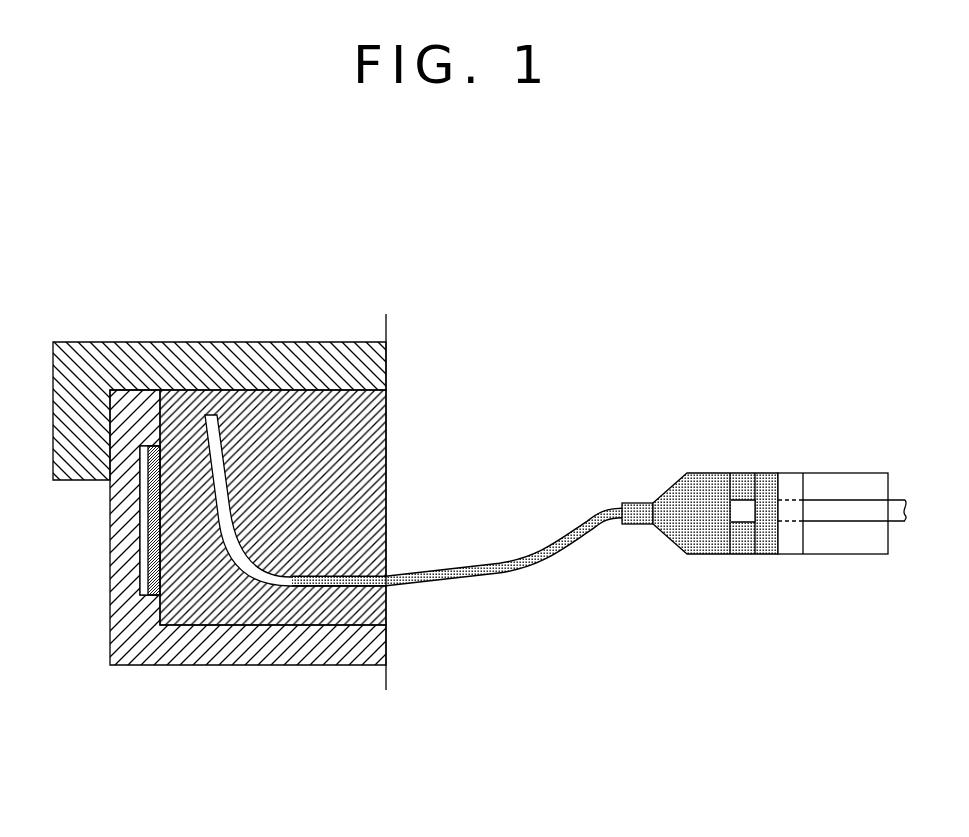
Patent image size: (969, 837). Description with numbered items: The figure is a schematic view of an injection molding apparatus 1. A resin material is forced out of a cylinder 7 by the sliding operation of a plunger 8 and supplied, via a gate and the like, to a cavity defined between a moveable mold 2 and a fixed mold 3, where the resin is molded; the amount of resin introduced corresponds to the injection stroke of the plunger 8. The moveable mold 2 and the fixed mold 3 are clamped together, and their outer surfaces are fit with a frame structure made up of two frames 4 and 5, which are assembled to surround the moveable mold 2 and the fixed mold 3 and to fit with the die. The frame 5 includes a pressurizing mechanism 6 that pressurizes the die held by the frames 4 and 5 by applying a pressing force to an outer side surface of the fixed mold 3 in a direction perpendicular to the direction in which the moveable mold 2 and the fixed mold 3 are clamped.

The injection molding apparatus 1 is at (510, 277).
The moveable mold 2 is at (370, 458).
The fixed mold 3 is at (375, 607).
The frame 4 is at (152, 353).
The frame 5 is at (290, 665).
The pressurizing mechanism 6 is at (145, 549).
The cylinder 7 is at (700, 555).
The plunger 8 is at (830, 521).